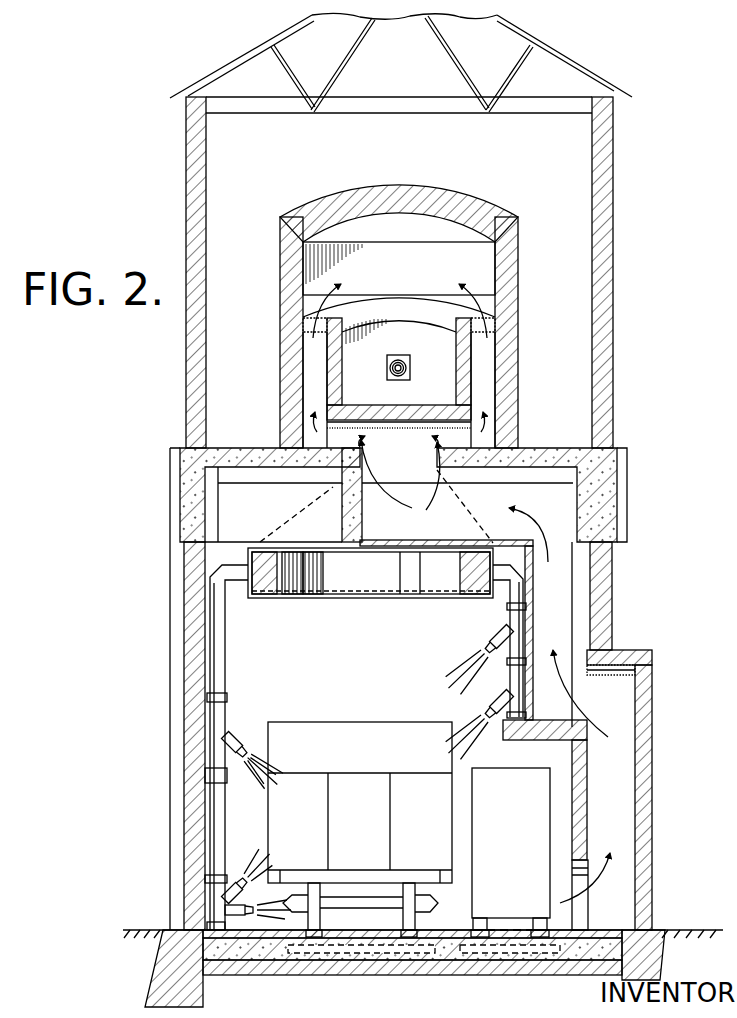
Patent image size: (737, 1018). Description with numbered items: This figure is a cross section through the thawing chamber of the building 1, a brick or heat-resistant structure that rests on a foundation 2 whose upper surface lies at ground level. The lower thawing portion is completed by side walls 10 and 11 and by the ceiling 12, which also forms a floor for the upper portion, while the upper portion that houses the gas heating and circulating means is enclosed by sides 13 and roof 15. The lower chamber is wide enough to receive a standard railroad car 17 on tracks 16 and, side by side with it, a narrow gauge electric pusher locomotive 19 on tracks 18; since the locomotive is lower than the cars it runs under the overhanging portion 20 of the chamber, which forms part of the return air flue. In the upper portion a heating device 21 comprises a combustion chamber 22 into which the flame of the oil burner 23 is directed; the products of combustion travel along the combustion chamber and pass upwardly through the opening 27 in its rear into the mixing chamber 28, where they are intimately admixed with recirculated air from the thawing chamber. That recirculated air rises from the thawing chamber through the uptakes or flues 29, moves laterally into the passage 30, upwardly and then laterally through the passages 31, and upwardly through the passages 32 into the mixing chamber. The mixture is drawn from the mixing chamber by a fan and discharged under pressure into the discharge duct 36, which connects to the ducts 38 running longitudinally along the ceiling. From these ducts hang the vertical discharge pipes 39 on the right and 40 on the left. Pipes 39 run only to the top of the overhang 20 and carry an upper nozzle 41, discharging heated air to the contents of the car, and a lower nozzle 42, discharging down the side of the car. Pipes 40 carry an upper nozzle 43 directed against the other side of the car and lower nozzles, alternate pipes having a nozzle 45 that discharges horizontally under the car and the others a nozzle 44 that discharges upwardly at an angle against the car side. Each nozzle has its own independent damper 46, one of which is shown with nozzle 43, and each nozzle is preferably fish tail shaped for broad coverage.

The building 1 is at (248, 620).
The foundation 2 is at (207, 967).
The side wall 10 is at (184, 710).
The side wall 11 is at (642, 748).
The ceiling 12 is at (254, 457).
The sides 13 is at (186, 170).
The roof 15 is at (571, 64).
The tracks 16 is at (407, 937).
The railroad car 17 is at (353, 740).
The tracks 18 is at (538, 940).
The pusher locomotive 19 is at (524, 847).
The overhanging portion 20 is at (553, 722).
The heating device 21 is at (453, 191).
The combustion chamber 22 is at (447, 385).
The oil burner 23 is at (387, 369).
The opening 27 is at (393, 309).
The mixing chamber 28 is at (399, 268).
The uptakes or flues 29 is at (617, 805).
The passage 30 is at (560, 643).
The passages 31 is at (533, 504).
The passages 32 is at (293, 368).
The discharge duct 36 is at (300, 548).
The longitudinal ducts 38 is at (457, 580).
The vertical discharge pipes 39 is at (510, 615).
The vertical discharge pipes 40 is at (222, 641).
The upper nozzle 41 is at (480, 657).
The lower nozzle 42 is at (492, 696).
The upper nozzle 43 is at (250, 752).
The lower nozzle 44 is at (238, 877).
The lower nozzle 45 is at (248, 914).
The damper 46 is at (236, 740).